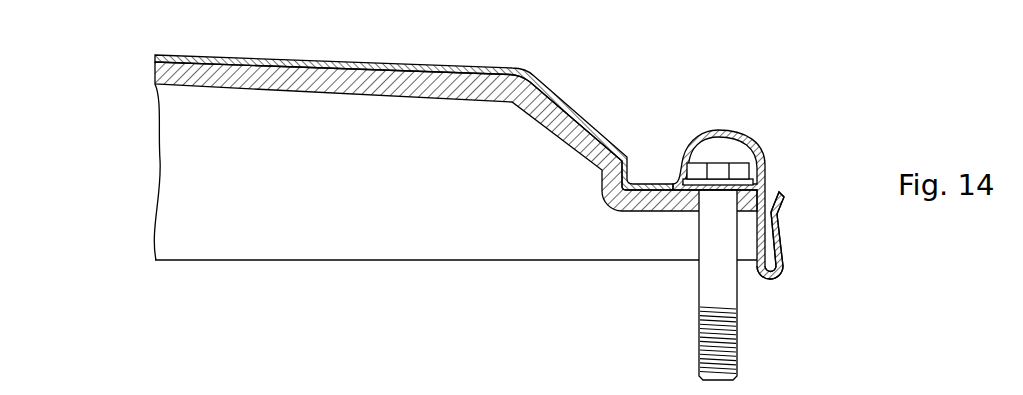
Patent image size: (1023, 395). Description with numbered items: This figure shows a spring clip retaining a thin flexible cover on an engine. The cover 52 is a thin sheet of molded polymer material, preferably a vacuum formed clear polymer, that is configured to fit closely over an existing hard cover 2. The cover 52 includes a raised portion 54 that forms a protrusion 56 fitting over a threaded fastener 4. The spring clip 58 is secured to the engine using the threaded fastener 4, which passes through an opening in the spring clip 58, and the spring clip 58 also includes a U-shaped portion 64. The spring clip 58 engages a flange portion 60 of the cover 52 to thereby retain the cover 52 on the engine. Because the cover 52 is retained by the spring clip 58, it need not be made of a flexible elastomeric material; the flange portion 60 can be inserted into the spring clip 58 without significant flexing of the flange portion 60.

The hard cover 2 is at (175, 86).
The threaded fastener 4 is at (737, 292).
The cover 52 is at (545, 84).
The raised portion 54 is at (731, 131).
The protrusion 56 is at (766, 167).
The spring clip 58 is at (782, 263).
The flange portion 60 is at (767, 193).
The U-shaped portion 64 is at (777, 274).